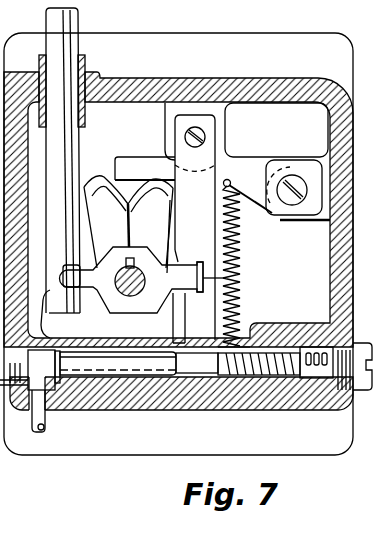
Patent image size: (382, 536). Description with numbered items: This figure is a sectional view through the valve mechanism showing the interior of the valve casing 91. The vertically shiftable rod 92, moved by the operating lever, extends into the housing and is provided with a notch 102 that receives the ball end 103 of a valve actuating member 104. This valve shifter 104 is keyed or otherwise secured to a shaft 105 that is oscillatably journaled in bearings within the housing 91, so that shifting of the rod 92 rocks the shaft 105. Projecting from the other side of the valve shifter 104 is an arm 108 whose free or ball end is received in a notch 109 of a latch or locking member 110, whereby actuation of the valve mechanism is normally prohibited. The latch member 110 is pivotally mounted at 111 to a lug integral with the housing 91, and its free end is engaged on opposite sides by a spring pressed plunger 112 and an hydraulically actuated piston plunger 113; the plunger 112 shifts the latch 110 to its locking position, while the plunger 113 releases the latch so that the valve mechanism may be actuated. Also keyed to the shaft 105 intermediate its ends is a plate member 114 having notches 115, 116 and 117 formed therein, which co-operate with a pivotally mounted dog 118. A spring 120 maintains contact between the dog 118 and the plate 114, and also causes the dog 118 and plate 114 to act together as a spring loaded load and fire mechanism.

The valve casing 91 is at (272, 73).
The rod 92 is at (60, 28).
The notch 102 is at (42, 321).
The ball end 103 is at (81, 298).
The valve actuating member 104 is at (121, 293).
The shaft 105 is at (140, 315).
The arm 108 is at (171, 272).
The notch 109 is at (228, 280).
The latch member 110 is at (224, 308).
The pivot 111 is at (205, 137).
The spring pressed plunger 112 is at (273, 378).
The hydraulically actuated piston plunger 113 is at (150, 362).
The plate member 114 is at (168, 223).
The notch 115 is at (106, 222).
The notch 116 is at (124, 225).
The notch 117 is at (150, 223).
The dog 118 is at (142, 163).
The spring 120 is at (236, 251).